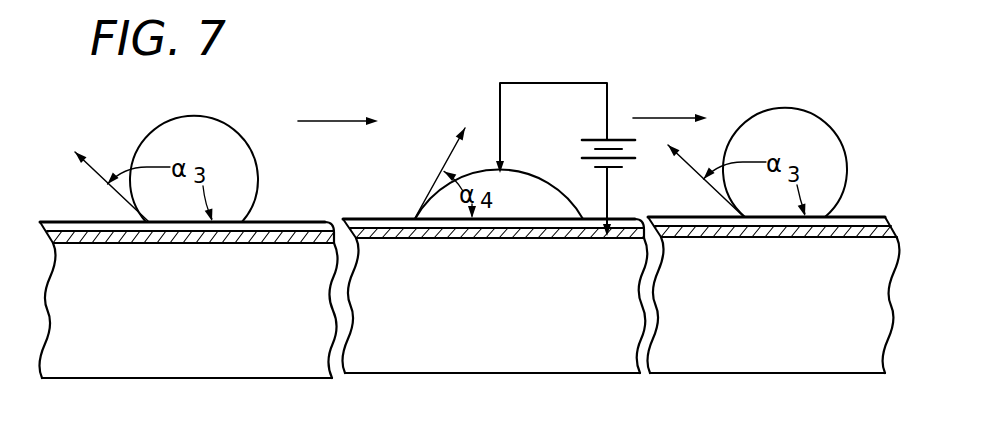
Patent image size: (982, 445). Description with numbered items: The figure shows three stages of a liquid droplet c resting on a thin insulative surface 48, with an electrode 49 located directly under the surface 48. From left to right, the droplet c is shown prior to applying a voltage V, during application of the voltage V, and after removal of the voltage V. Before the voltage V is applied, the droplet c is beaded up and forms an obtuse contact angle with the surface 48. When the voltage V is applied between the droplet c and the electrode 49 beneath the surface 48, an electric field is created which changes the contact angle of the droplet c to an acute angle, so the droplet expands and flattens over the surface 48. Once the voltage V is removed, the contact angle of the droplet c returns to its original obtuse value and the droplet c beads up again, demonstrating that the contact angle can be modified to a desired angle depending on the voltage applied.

The thin insulative surface 48 is at (258, 222).
The electrode 49 is at (335, 222).
The droplet c is at (199, 116).
The voltage V is at (575, 159).